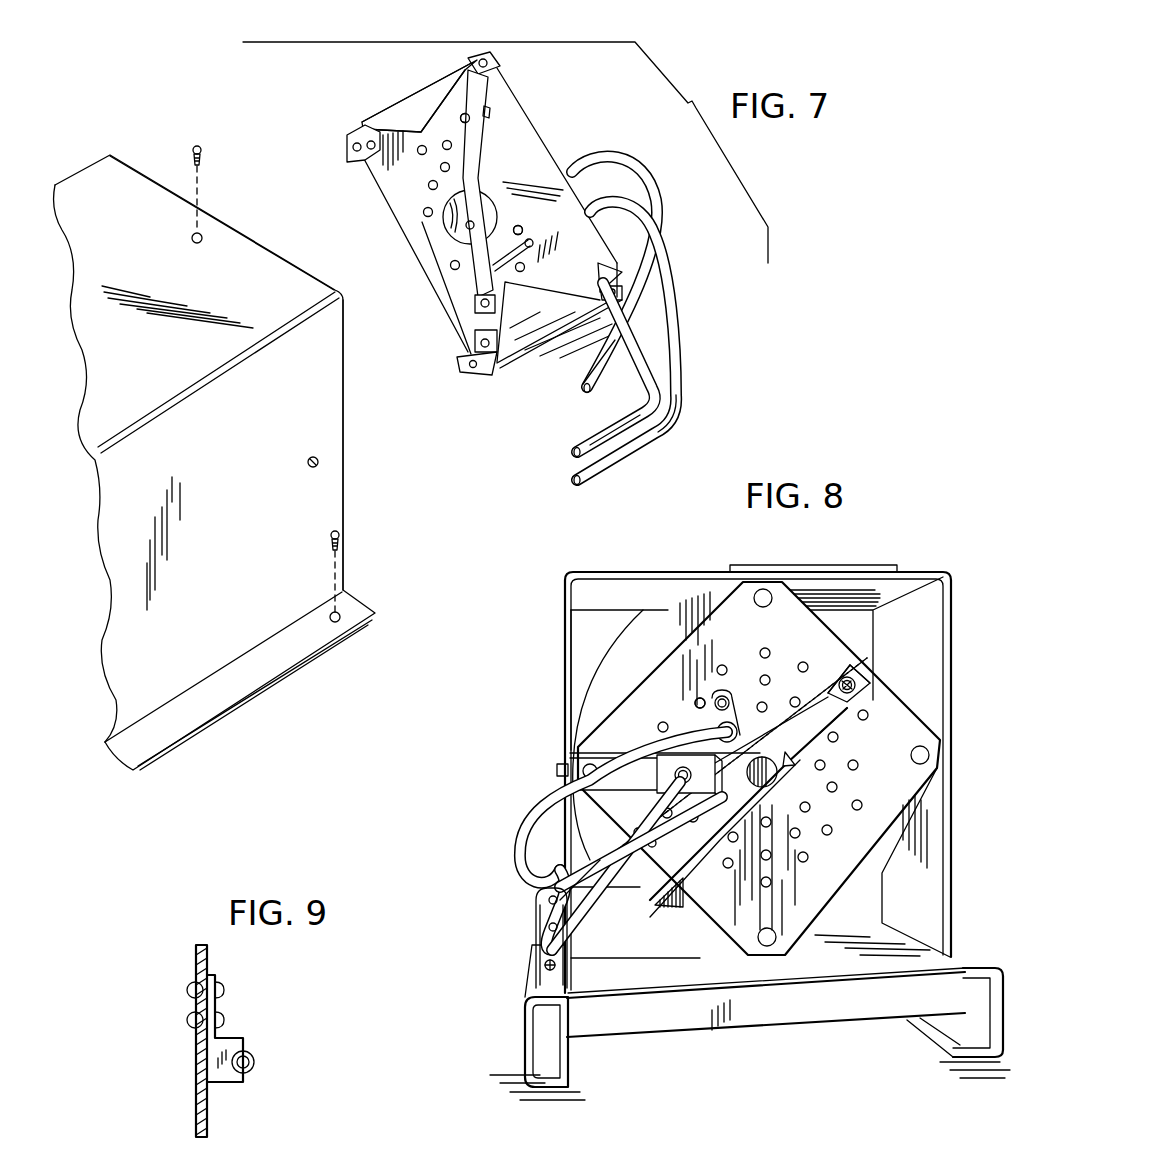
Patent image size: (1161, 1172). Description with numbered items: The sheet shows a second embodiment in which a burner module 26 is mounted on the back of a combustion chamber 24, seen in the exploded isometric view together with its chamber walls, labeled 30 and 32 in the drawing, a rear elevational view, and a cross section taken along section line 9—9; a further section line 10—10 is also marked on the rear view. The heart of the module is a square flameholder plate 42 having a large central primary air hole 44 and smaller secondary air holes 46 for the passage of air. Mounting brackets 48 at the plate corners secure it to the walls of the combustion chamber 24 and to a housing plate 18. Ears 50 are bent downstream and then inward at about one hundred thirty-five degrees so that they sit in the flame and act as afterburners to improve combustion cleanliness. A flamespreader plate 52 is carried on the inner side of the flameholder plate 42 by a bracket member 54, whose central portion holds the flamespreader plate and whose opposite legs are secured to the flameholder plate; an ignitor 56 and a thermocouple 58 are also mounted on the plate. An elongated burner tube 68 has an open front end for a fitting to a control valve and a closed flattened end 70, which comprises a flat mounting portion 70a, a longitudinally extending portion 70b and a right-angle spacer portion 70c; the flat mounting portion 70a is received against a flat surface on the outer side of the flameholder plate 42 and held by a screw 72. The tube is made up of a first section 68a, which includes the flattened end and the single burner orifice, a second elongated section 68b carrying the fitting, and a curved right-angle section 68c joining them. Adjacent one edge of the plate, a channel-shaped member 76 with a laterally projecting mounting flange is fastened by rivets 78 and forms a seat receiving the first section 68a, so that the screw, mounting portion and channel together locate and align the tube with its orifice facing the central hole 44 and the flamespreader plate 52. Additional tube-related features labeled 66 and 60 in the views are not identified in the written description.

In FIG. 7, the combustion chamber 24 is at (235, 195).
In FIG. 8, the combustion chamber 24 is at (651, 570).
In FIG. 7, the panel top wall 30 is at (232, 248).
In FIG. 7, the panel side wall 32 is at (335, 508).
In FIG. 7, the flameholder plate 42 is at (470, 95).
In FIG. 9, the flameholder plate 42 is at (207, 1120).
In FIG. 7, the ears 50 is at (405, 110).
In FIG. 7, the mounting brackets 48 is at (350, 138).
In FIG. 8, the mounting brackets 48 is at (775, 960).
In FIG. 7, the secondary air holes 46 is at (468, 118).
In FIG. 8, the secondary air holes 46 is at (700, 703).
In FIG. 7, the bracket member 54 is at (468, 200).
In FIG. 7, the ignitor 56 is at (520, 228).
In FIG. 8, the ignitor 56 is at (720, 728).
In FIG. 7, the flamespreader plate 52 is at (452, 230).
In FIG. 7, the thermocouple 58 is at (493, 268).
In FIG. 8, the thermocouple 58 is at (565, 793).
In FIG. 7, the first tube 66 is at (657, 201).
In FIG. 8, the first tube 66 is at (548, 898).
In FIG. 7, the burner module 26 is at (704, 333).
In FIG. 8, the burner module 26 is at (583, 720).
In FIG. 7, the elongated burner tube 68 is at (692, 418).
In FIG. 8, the elongated burner tube 68 is at (581, 954).
In FIG. 7, the first section 68a is at (600, 330).
In FIG. 8, the first section 68a is at (762, 815).
In FIG. 9, the first section 68a is at (260, 1062).
In FIG. 7, the second elongated section 68b is at (573, 465).
In FIG. 8, the second elongated section 68b is at (545, 920).
In FIG. 7, the curved right-angle section 68c is at (674, 405).
In FIG. 8, the curved right-angle section 68c is at (547, 950).
In FIG. 8, the housing plate 18 is at (715, 975).
In FIG. 8, the central primary air hole 44 is at (760, 760).
In FIG. 8, the closed flattened end 70 is at (897, 675).
In FIG. 8, the flat mounting portion 70a is at (862, 680).
In FIG. 8, the longitudinally extending portion 70b is at (822, 727).
In FIG. 8, the right-angle spacer portion 70c is at (817, 677).
In FIG. 8, the screw 72 is at (870, 692).
In FIG. 8, the channel-shaped member 76 is at (682, 900).
In FIG. 9, the channel-shaped member 76 is at (235, 1043).
In FIG. 8, the rivets 78 is at (634, 830).
In FIG. 9, the rivets 78 is at (190, 990).
In FIG. 8, the tube loop 60 is at (518, 866).
In FIG. 8, the section line 9— 9 is at (613, 855).
In FIG. 8, the section line 10— 10 is at (866, 656).